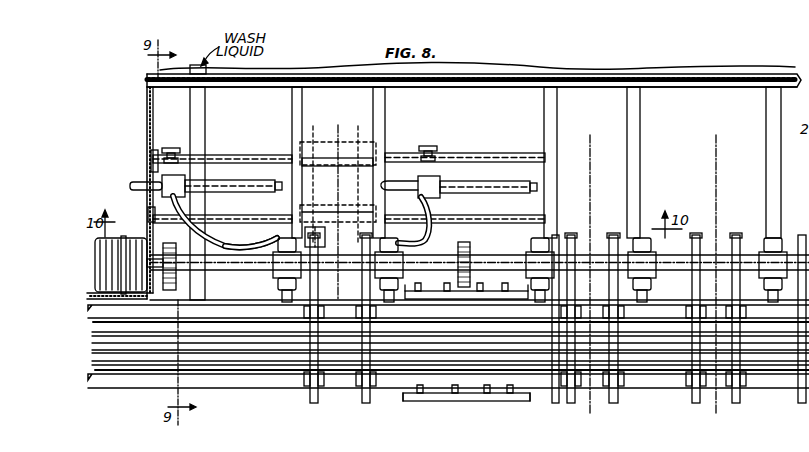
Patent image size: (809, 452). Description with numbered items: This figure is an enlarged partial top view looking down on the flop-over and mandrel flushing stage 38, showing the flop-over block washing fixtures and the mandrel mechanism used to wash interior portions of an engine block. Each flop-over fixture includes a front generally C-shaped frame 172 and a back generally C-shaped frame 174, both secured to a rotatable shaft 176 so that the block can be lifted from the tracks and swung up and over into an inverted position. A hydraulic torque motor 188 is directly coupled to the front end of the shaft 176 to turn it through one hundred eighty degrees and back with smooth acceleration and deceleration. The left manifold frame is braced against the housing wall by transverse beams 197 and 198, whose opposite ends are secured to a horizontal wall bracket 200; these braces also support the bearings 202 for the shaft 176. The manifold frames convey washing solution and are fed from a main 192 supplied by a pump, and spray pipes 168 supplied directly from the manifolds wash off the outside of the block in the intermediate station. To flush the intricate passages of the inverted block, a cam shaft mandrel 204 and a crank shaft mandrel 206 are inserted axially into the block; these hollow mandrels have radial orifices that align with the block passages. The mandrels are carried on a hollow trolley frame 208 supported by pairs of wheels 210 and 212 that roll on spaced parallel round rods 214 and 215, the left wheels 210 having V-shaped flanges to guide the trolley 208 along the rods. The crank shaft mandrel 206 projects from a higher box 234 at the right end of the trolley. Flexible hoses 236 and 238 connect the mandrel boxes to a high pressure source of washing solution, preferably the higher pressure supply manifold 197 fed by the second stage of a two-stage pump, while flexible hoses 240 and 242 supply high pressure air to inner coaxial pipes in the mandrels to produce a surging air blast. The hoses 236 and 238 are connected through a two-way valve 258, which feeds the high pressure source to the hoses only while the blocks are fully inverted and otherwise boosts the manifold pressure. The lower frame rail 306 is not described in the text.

The flop-over and mandrel flushing stage 38 is at (520, 73).
The pipes 168 is at (491, 293).
The front C-shaped frame 172 is at (312, 403).
The back C-shaped frame 174 is at (364, 403).
The rotatable shaft 176 is at (210, 271).
The hydraulic torque motor 188 is at (112, 236).
The main 192 is at (206, 128).
The transverse beam 197 is at (292, 107).
The transverse beams 198 is at (386, 105).
The horizontal wall bracket 200 is at (447, 87).
The bearings 202 is at (403, 246).
The cam shaft mandrel 204 is at (247, 177).
The crank shaft mandrel 206 is at (479, 188).
The hollow trolley frame 208 is at (213, 177).
The wheels 210 is at (171, 148).
The wheels 212 is at (156, 226).
The round rod 214 is at (512, 158).
The round rod 215 is at (223, 220).
The box 234 is at (432, 176).
The flexible hose 236 is at (231, 250).
The flexible hose 238 is at (436, 237).
The flexible hose 240 is at (136, 182).
The flexible hose 242 is at (393, 176).
The two-way valve 258 is at (331, 242).
The lower frame rail 306 is at (545, 381).